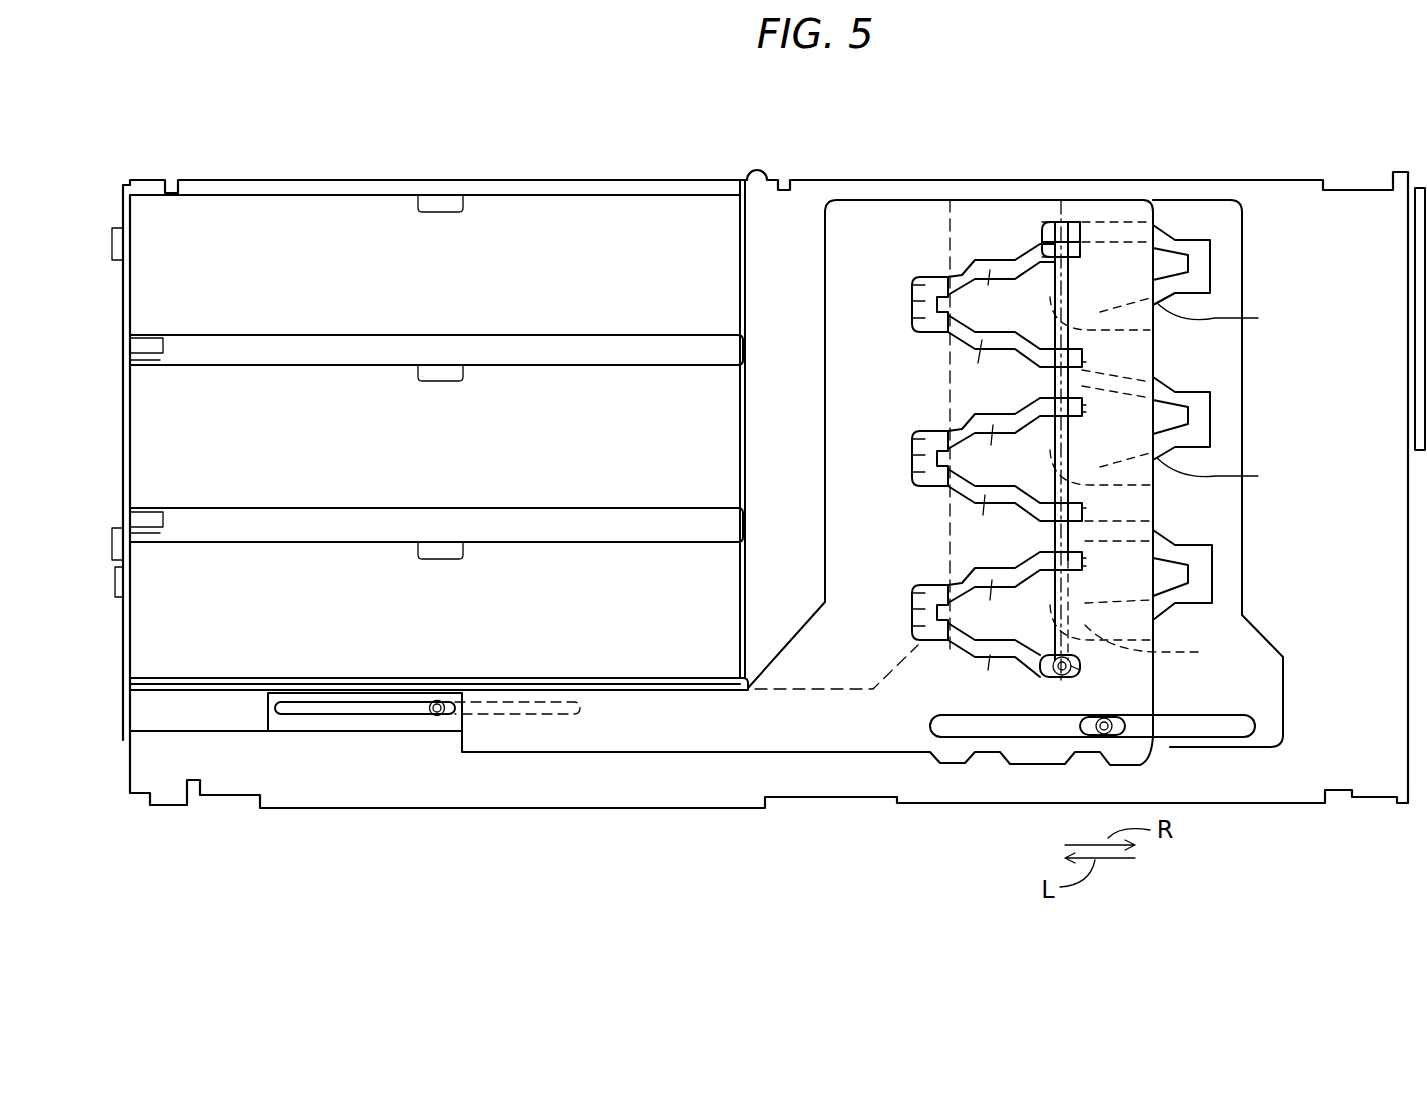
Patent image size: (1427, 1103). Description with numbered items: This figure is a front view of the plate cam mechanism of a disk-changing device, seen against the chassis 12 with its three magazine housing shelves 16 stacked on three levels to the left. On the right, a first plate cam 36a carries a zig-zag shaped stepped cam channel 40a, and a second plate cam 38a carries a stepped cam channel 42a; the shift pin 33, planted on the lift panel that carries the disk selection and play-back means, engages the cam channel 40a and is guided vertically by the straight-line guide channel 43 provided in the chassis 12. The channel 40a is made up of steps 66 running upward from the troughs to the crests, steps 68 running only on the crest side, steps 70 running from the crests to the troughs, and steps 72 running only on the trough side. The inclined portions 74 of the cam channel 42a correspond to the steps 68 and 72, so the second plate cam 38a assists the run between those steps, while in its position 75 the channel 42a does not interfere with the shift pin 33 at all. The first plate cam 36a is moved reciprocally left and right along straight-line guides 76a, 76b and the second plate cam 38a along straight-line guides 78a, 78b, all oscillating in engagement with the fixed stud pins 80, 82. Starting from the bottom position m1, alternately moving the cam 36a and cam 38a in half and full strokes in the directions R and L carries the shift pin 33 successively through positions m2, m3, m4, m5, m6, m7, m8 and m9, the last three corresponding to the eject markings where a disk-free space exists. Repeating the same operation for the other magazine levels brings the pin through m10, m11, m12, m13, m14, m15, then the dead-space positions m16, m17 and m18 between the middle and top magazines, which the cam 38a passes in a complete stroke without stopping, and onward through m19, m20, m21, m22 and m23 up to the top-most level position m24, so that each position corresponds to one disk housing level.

The chassis 12 is at (1352, 727).
The magazine housing shelves 16 is at (355, 335).
The shift pin 33 is at (1050, 678).
The first plate cam 36a is at (935, 202).
The second plate cam 38a is at (1212, 220).
The zig-zag shaped stepped cam channel 40a is at (1012, 255).
The stepped cam channel 42a is at (1180, 235).
The straight-line guide channel 43 is at (1065, 283).
The steps 66 is at (947, 338).
The steps 68 is at (912, 280).
The steps 70 is at (960, 268).
The steps 72 is at (1055, 376).
The inclined portions 74 is at (1190, 485).
The position of cam channel 42a 75 is at (1213, 267).
The straight-line guide 76a is at (1033, 740).
The straight-line guide 76b is at (372, 716).
The straight-line guide 78a is at (1210, 738).
The straight-line guide 78b is at (540, 716).
The stud pin 80 is at (1110, 733).
The stud pin 82 is at (437, 716).
The bottom position m1 is at (1078, 674).
The engagement position m2 is at (985, 675).
The engagement position m3 is at (915, 627).
The engagement position m4 is at (915, 610).
The engagement position m5 is at (915, 594).
The engagement position m6 is at (982, 604).
The engagement position m7 is at (1082, 560).
The engagement position m8 is at (1082, 545).
The engagement position m9 is at (1082, 508).
The engagement position m10 is at (982, 519).
The engagement position m11 is at (915, 473).
The engagement position m12 is at (915, 456).
The engagement position m13 is at (915, 440).
The engagement position m14 is at (987, 451).
The engagement position m15 is at (1082, 400).
The step position m16 is at (1083, 385).
The step position m17 is at (1082, 362).
The step position m18 is at (967, 372).
The engagement position m19 is at (915, 319).
The engagement position m20 is at (915, 302).
The engagement position m21 is at (915, 287).
The engagement position m22 is at (989, 294).
The engagement position m23 is at (1077, 250).
The top-most level position m24 is at (1076, 243).